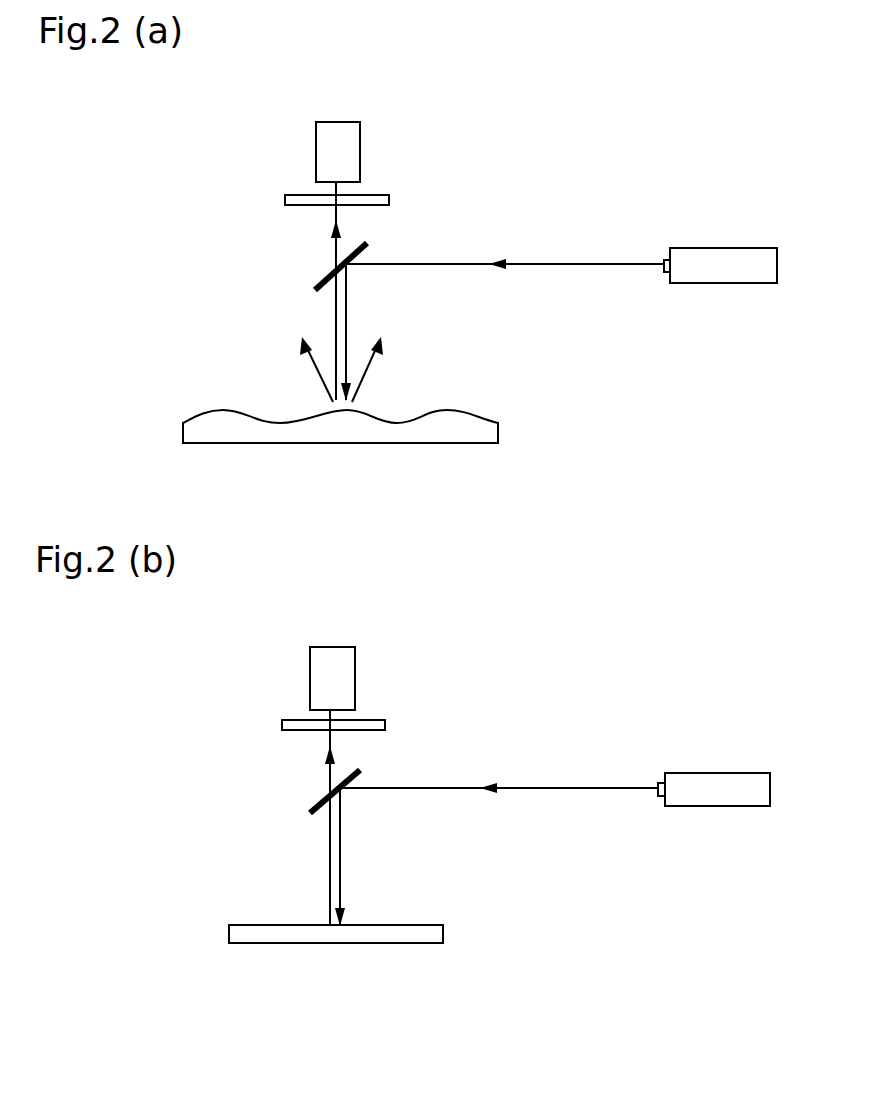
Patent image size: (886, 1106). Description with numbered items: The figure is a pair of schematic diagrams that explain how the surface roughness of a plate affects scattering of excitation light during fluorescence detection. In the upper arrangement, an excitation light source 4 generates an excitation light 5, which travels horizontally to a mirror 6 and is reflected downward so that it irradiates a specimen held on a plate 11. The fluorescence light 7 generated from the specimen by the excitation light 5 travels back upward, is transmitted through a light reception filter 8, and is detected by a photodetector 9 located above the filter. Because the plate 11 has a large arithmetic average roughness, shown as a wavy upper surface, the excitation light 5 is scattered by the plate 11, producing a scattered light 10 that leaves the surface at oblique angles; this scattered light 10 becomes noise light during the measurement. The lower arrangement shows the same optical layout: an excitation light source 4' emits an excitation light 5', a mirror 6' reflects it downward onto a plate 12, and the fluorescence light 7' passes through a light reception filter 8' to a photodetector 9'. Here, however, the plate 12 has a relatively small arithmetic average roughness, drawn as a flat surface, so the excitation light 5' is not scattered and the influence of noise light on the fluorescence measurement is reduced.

The excitation light source 4 is at (720, 232).
The excitation light 5 is at (505, 234).
The mirror 6 is at (312, 266).
The fluorescence light 7 is at (307, 291).
The light reception filter 8 is at (376, 199).
The photodetector 9 is at (373, 152).
The scattered light 10 is at (316, 366).
The plate 11 is at (498, 432).
The excitation light source 4' is at (714, 757).
The excitation light 5' is at (499, 759).
The mirror 6' is at (307, 790).
The fluorescence light 7' is at (302, 818).
The light reception filter 8' is at (374, 724).
The photodetector 9' is at (370, 678).
The plate 12 is at (443, 935).